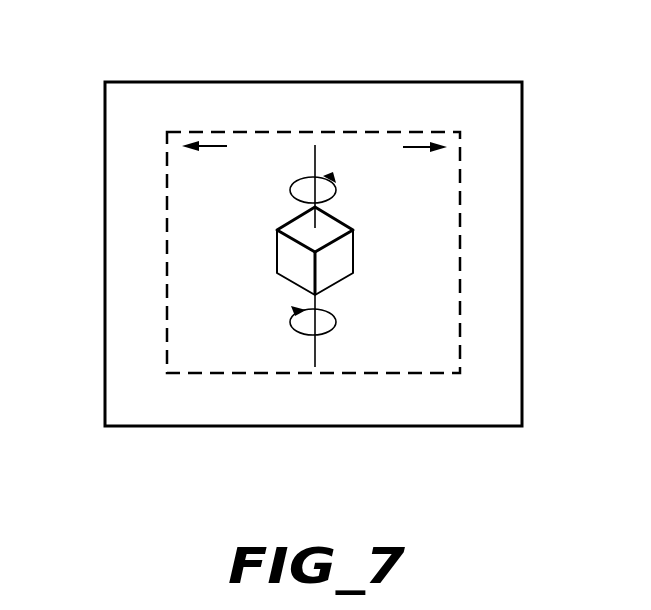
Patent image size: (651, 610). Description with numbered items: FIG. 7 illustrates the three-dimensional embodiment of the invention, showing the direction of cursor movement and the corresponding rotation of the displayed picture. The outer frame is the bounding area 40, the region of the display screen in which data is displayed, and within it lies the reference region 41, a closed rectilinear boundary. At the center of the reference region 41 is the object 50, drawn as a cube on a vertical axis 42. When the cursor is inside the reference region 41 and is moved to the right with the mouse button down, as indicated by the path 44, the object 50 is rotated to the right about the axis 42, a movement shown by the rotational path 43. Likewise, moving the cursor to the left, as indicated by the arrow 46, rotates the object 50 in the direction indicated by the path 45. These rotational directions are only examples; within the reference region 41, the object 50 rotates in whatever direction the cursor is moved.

The bounding area 40 is at (265, 426).
The reference region 41 is at (364, 373).
The axis 42 is at (315, 164).
The rotational path 43 is at (330, 178).
The path 44 is at (416, 147).
The path 45 is at (290, 322).
The arrow 46 is at (220, 147).
The object 50 is at (355, 263).